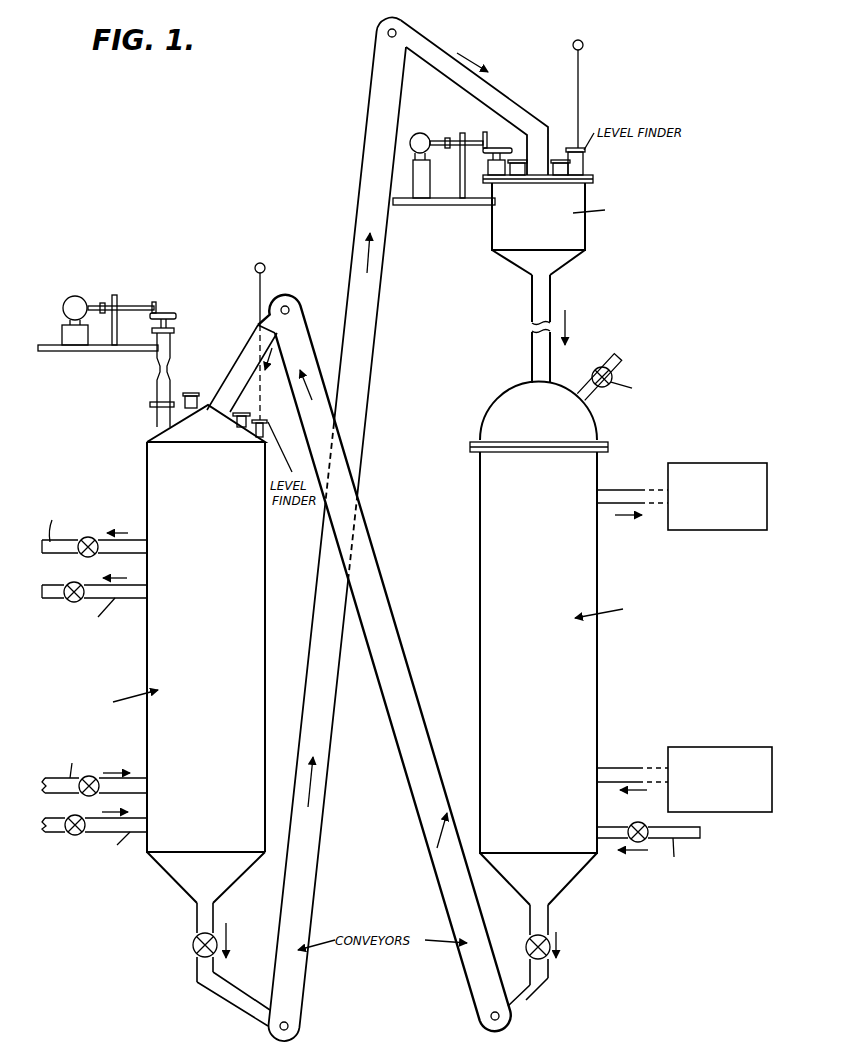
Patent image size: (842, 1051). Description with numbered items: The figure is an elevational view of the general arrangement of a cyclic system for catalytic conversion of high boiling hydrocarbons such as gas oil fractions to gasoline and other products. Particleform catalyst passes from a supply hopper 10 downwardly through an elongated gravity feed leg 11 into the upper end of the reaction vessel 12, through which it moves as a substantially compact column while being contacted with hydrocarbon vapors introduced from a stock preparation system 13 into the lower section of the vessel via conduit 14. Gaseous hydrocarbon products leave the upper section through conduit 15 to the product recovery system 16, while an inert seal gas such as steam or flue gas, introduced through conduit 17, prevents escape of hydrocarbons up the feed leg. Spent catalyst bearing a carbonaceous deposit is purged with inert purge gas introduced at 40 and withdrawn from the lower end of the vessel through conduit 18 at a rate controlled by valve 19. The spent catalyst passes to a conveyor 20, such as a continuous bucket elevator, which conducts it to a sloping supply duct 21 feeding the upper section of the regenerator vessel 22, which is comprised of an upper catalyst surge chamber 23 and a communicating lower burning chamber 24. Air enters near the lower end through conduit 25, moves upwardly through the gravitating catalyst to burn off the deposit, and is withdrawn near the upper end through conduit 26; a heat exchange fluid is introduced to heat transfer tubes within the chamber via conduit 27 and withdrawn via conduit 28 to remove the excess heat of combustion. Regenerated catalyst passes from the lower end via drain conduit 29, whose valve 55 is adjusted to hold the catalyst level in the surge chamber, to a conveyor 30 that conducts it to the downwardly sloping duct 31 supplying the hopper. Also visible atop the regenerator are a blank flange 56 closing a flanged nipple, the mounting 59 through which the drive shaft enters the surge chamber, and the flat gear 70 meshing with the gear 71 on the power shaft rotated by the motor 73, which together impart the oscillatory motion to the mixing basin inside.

The supply hopper 10 is at (578, 235).
The gravity feed leg 11 is at (551, 362).
The reaction vessel 12 is at (588, 580).
The stock preparation system 13 is at (710, 753).
The conduit 14 is at (607, 768).
The conduit 15 is at (609, 491).
The product recovery system 16 is at (704, 463).
The conduit 17 is at (618, 362).
The conduit 18 is at (549, 917).
The valve 19 is at (547, 960).
The conveyor 20 is at (432, 793).
The sloping supply duct 21 is at (248, 357).
The regenerator vessel 22 is at (150, 438).
The catalyst surge chamber 23 is at (256, 556).
The burning chamber 24 is at (158, 652).
The conduit 25 is at (44, 781).
The conduit 26 is at (133, 598).
The conduit 27 is at (44, 818).
The conduit 28 is at (135, 542).
The conduit 29 is at (203, 918).
The conveyor 30 is at (307, 888).
The downwardly sloping duct 31 is at (437, 57).
The purge gas inlet 40 is at (607, 827).
The valve 55 is at (200, 958).
The blank flange 56 is at (190, 393).
The mounting 59 is at (171, 346).
The flat gear 70 is at (176, 313).
The gear 71 is at (154, 302).
The motor 73 is at (67, 298).